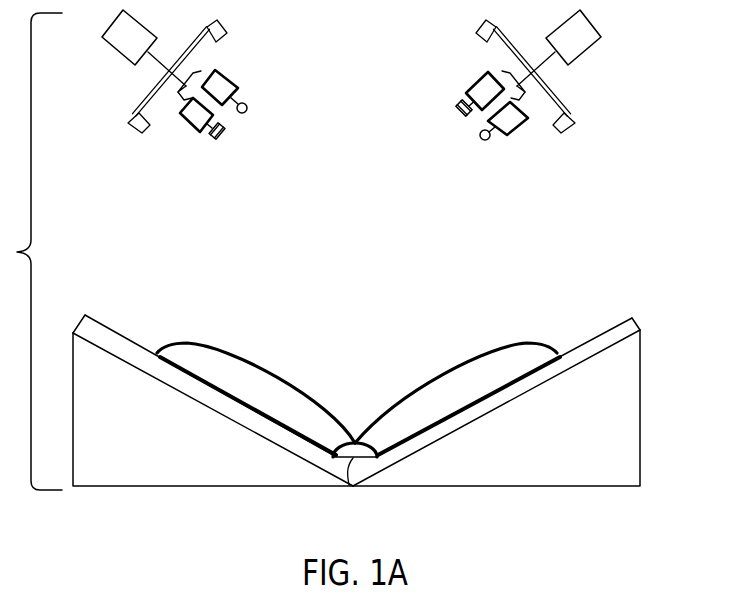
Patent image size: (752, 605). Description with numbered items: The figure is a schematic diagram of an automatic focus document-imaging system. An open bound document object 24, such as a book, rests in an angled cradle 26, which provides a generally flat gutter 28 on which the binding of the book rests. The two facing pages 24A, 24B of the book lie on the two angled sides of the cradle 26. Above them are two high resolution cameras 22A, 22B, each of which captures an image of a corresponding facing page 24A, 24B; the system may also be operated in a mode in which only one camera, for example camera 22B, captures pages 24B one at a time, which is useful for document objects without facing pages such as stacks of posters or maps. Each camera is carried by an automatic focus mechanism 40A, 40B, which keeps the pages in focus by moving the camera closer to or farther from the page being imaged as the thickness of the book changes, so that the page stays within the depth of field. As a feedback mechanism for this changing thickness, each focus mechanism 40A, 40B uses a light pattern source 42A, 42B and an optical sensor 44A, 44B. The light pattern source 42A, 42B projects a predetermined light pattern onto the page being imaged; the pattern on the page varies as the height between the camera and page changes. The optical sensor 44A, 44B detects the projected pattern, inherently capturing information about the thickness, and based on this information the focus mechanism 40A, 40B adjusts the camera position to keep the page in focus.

The high resolution camera 22A is at (480, 75).
The high resolution camera 22B is at (187, 133).
The document object 24 is at (366, 397).
The facing page 24A is at (257, 362).
The facing page 24B is at (455, 360).
The angled cradle 26 is at (642, 328).
The gutter 28 is at (350, 487).
The automatic focus mechanism 40A is at (534, 96).
The automatic focus mechanism 40B is at (179, 92).
The light pattern source 42A is at (572, 130).
The light pattern source 42B is at (137, 133).
The optical sensor 44A is at (525, 125).
The optical sensor 44B is at (228, 70).